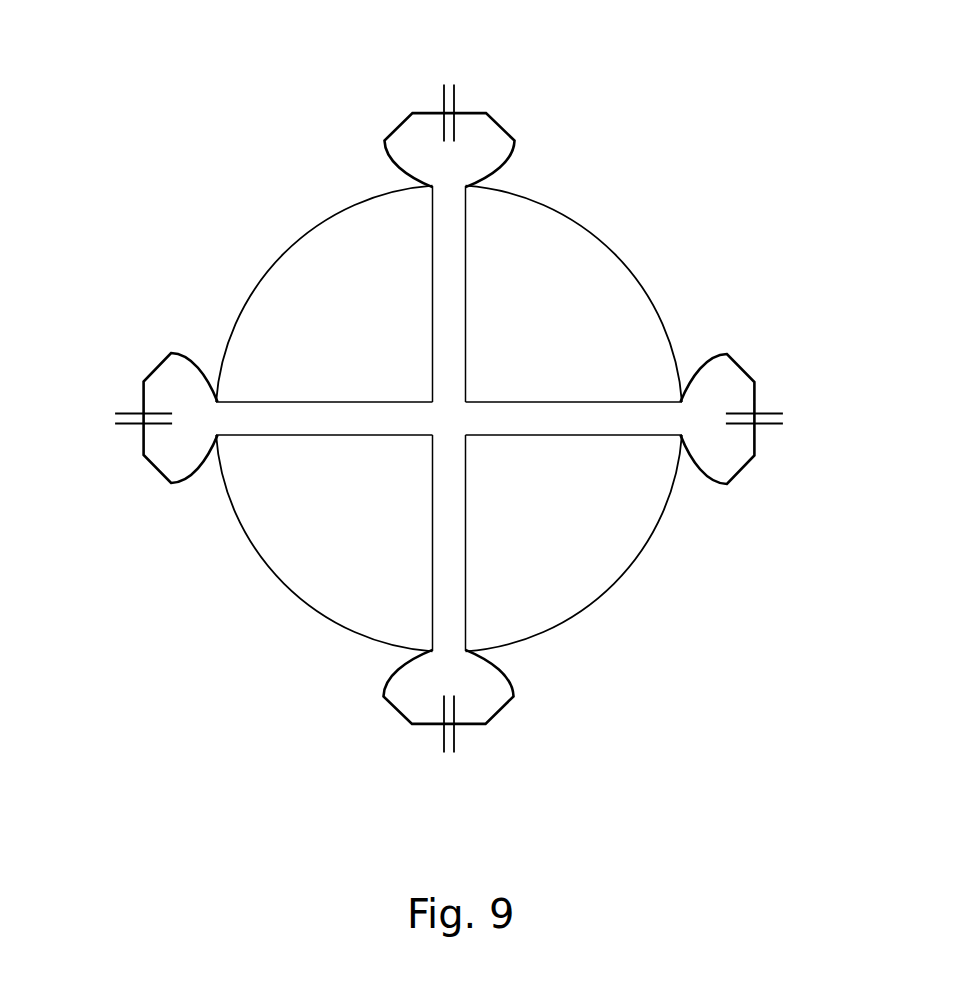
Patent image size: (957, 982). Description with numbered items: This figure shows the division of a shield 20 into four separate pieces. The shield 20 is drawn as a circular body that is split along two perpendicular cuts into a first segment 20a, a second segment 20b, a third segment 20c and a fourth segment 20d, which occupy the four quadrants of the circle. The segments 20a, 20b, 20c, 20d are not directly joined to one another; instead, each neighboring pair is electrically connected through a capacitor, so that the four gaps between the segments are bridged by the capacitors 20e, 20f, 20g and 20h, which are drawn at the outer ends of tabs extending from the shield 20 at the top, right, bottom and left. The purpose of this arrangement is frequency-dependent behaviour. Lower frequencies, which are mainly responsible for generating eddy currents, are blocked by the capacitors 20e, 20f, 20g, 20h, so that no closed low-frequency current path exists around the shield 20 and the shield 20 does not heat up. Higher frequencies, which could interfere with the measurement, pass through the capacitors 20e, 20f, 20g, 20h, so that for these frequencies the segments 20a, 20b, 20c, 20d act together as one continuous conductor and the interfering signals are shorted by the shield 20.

The shield 20 is at (270, 687).
The segment 20a is at (290, 265).
The segment 20b is at (585, 258).
The segment 20c is at (612, 560).
The segment 20d is at (298, 565).
The capacitor 20e is at (448, 86).
The capacitor 20f is at (784, 420).
The capacitor 20g is at (450, 752).
The capacitor 20h is at (113, 416).